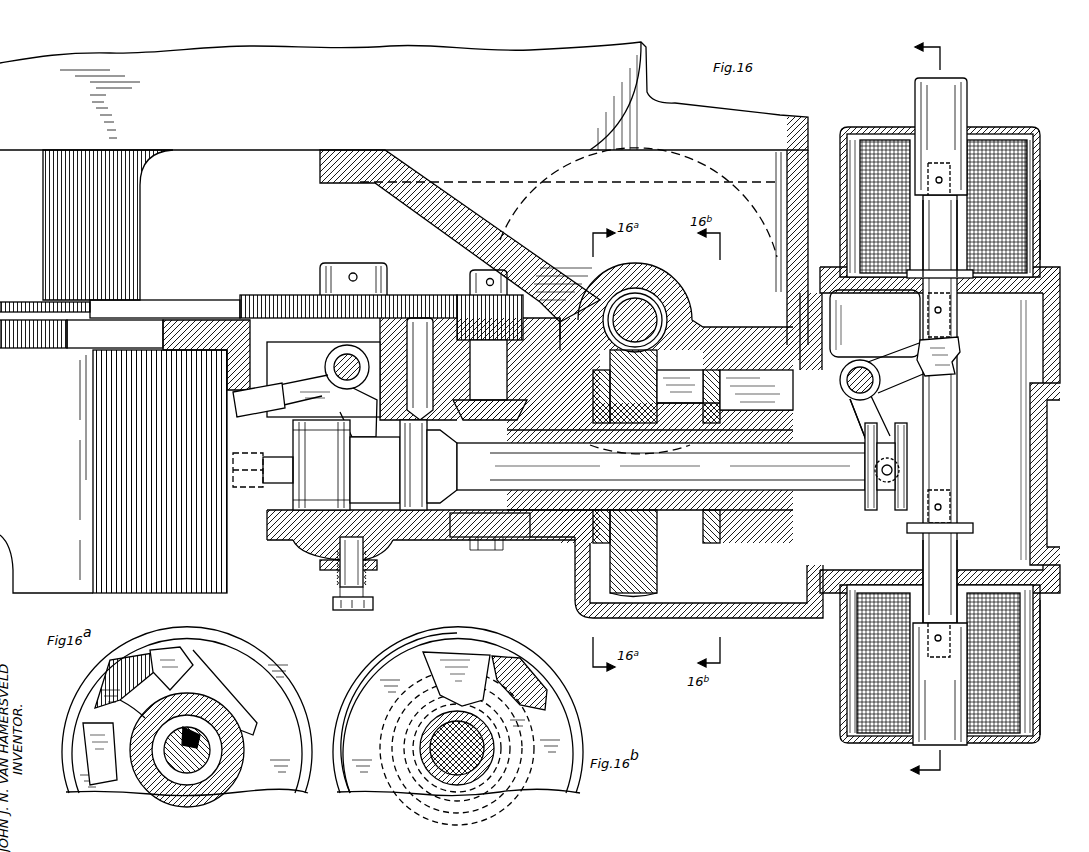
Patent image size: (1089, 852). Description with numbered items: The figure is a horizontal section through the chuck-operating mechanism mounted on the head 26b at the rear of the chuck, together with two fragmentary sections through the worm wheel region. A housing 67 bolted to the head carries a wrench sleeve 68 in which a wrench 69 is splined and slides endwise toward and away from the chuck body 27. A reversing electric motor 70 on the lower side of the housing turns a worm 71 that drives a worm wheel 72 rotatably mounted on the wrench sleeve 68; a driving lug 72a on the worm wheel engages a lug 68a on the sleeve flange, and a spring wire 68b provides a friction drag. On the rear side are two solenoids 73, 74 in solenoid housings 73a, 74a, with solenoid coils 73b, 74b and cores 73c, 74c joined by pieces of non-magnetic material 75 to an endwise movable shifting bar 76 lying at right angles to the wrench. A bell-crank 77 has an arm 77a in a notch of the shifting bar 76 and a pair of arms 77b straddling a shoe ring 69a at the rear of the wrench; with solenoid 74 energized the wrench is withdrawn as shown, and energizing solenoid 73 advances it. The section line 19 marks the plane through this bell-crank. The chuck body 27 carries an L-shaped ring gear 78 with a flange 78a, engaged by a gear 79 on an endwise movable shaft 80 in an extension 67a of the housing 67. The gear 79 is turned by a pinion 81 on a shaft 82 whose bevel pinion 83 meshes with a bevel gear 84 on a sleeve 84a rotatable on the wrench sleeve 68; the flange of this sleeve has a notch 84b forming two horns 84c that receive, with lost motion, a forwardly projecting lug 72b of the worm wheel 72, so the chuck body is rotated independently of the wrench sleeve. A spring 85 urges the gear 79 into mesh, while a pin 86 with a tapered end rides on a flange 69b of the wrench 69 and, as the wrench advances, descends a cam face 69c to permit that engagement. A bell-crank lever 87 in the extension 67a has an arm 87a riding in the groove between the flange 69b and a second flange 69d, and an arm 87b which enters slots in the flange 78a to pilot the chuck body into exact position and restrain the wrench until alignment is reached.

In FIG. 16, the section line 19— 19 is at (915, 410).
In FIG. 16, the head 26b is at (255, 142).
In FIG. 16, the chuck body 27 is at (170, 590).
In FIG. 16, the housing 67 is at (426, 210).
In FIG. 16, the housing extension 67a is at (267, 528).
In FIG. 16, the wrench sleeve 68 is at (742, 514).
In FIG. 16A, the wrench sleeve 68 is at (230, 742).
In FIG. 16B, the wrench sleeve 68 is at (490, 755).
In FIG. 16, the lug 68a is at (690, 375).
In FIG. 16B, the lug 68a is at (470, 652).
In FIG. 16, the spring wire 68b is at (693, 527).
In FIG. 16, the wrench 69 is at (826, 492).
In FIG. 16A, the wrench 69 is at (212, 757).
In FIG. 16B, the wrench 69 is at (425, 742).
In FIG. 16, the shoe ring 69a is at (878, 509).
In FIG. 16, the flange 69b is at (419, 509).
In FIG. 16, the cam face 69c is at (445, 491).
In FIG. 16, the second flange 69d is at (312, 527).
In FIG. 16, the reversing electric motor 70 is at (478, 292).
In FIG. 16, the worm 71 is at (661, 317).
In FIG. 16, the worm wheel 72 is at (655, 367).
In FIG. 16A, the worm wheel 72 is at (262, 665).
In FIG. 16B, the worm wheel 72 is at (565, 720).
In FIG. 16, the driving lug 72a is at (721, 388).
In FIG. 16B, the driving lug 72a is at (522, 668).
In FIG. 16, the lug 72b is at (600, 374).
In FIG. 16A, the lug 72b is at (115, 685).
In FIG. 16, the solenoid 73 is at (953, 202).
In FIG. 16, the solenoid housing 73a is at (1034, 220).
In FIG. 16, the solenoid coil 73b is at (1010, 231).
In FIG. 16, the core 73c is at (955, 118).
In FIG. 16, the solenoid 74 is at (953, 664).
In FIG. 16, the solenoid housing 74a is at (1033, 711).
In FIG. 16, the solenoid coil 74b is at (1010, 620).
In FIG. 16, the core 74c is at (953, 746).
In FIG. 16, the pieces of non-magnetic material 75 is at (940, 411).
In FIG. 16, the shifting bar 76 is at (953, 441).
In FIG. 16, the bell-crank 77 is at (882, 399).
In FIG. 16, the arm 77a is at (946, 357).
In FIG. 16, the pair of arms 77b is at (852, 421).
In FIG. 16, the ring gear 78 is at (214, 300).
In FIG. 16, the flange 78a is at (227, 373).
In FIG. 16, the gear 79 is at (285, 296).
In FIG. 16, the endwise movable shaft 80 is at (340, 327).
In FIG. 16, the pinion 81 is at (520, 324).
In FIG. 16, the shaft 82 is at (490, 347).
In FIG. 16, the bevel pinion 83 is at (487, 421).
In FIG. 16, the bevel gear 84 is at (512, 519).
In FIG. 16, the sleeve 84a is at (545, 540).
In FIG. 16A, the sleeve 84a is at (220, 740).
In FIG. 16A, the notch 84b is at (200, 668).
In FIG. 16A, the horns 84c is at (175, 650).
In FIG. 16, the spring 85 is at (334, 588).
In FIG. 16, the pin 86 is at (418, 334).
In FIG. 16, the bell-crank lever 87 is at (297, 387).
In FIG. 16, the arm 87a is at (338, 433).
In FIG. 16, the arm 87b is at (257, 412).